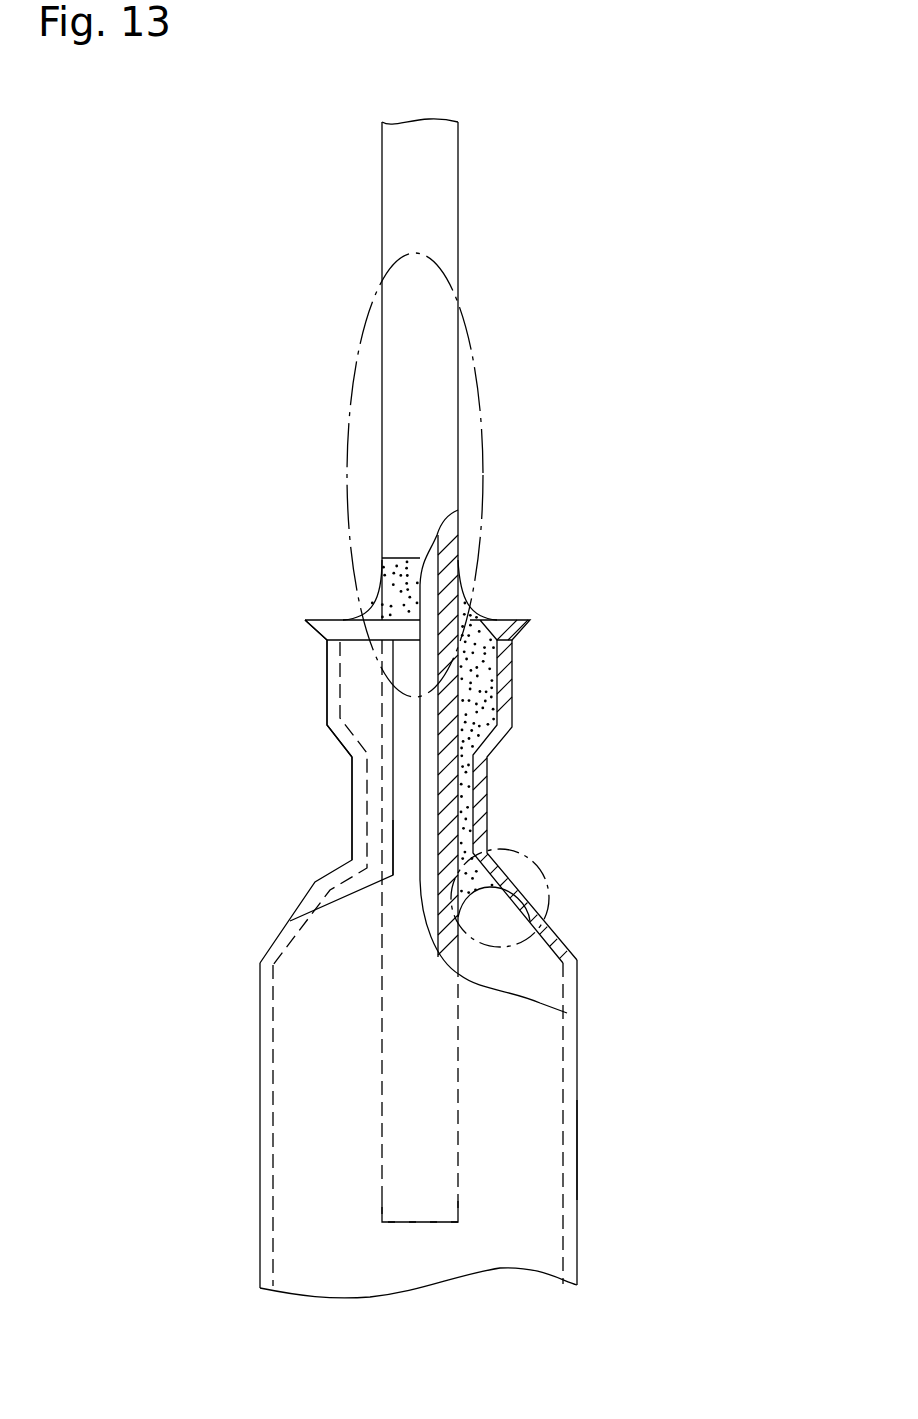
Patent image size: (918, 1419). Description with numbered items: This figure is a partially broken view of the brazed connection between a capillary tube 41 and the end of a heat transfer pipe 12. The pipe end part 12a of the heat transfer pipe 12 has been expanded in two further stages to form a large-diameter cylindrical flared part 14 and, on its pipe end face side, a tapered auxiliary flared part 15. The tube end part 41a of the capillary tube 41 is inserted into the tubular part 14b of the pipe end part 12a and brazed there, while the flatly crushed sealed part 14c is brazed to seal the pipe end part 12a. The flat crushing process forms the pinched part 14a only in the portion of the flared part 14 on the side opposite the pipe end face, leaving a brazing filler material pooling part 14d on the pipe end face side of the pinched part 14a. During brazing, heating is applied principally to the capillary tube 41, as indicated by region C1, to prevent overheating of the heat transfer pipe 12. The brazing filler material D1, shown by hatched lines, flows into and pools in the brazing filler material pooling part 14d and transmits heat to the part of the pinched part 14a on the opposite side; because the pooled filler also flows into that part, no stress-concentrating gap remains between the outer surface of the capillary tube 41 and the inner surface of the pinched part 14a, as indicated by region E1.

The capillary tube 41 is at (462, 177).
The tube end part 41a is at (383, 877).
The region C1 is at (472, 343).
The brazing filler material D1 is at (366, 594).
The region E1 is at (522, 862).
The auxiliary flared part 15 is at (305, 621).
The flared part 14 is at (188, 805).
The pinched part 14a is at (256, 658).
The tubular part 14b is at (362, 782).
The sealed part 14c is at (400, 832).
The brazing filler material pooling part 14d is at (353, 690).
The heat transfer pipe 12 is at (652, 1242).
The pipe end part 12a is at (627, 1155).